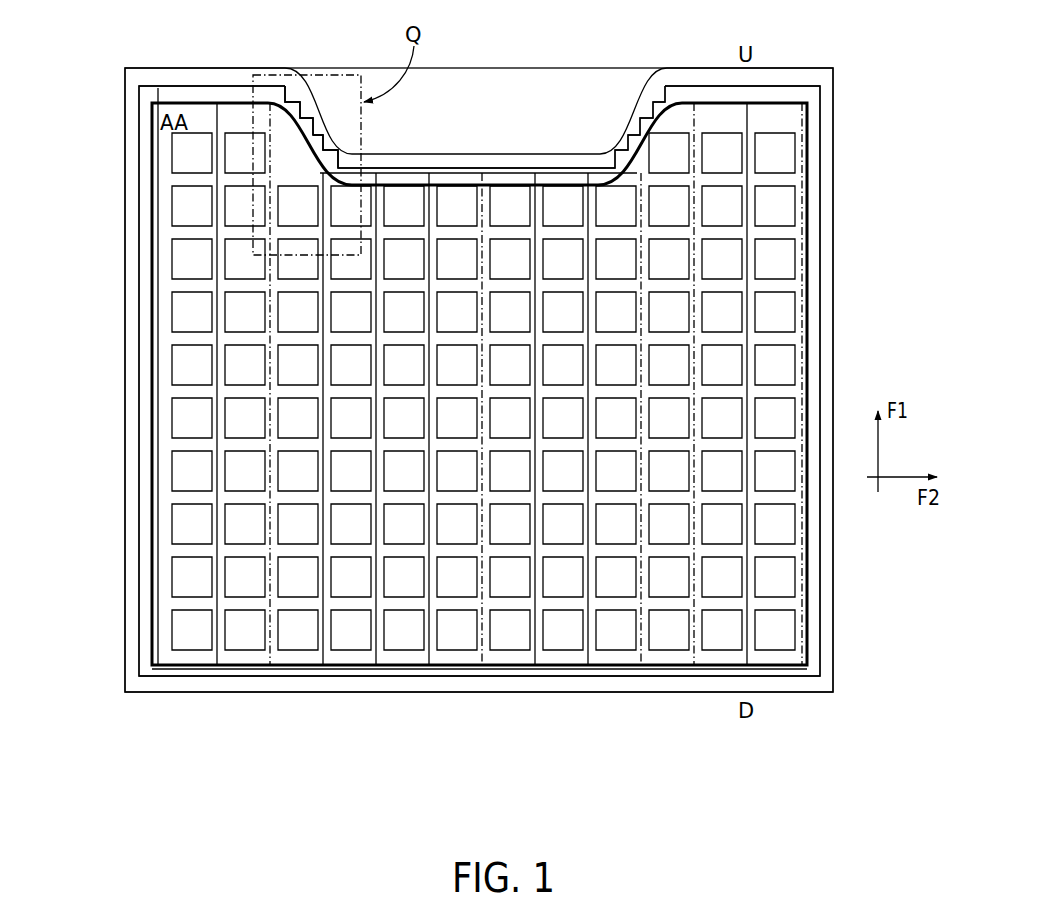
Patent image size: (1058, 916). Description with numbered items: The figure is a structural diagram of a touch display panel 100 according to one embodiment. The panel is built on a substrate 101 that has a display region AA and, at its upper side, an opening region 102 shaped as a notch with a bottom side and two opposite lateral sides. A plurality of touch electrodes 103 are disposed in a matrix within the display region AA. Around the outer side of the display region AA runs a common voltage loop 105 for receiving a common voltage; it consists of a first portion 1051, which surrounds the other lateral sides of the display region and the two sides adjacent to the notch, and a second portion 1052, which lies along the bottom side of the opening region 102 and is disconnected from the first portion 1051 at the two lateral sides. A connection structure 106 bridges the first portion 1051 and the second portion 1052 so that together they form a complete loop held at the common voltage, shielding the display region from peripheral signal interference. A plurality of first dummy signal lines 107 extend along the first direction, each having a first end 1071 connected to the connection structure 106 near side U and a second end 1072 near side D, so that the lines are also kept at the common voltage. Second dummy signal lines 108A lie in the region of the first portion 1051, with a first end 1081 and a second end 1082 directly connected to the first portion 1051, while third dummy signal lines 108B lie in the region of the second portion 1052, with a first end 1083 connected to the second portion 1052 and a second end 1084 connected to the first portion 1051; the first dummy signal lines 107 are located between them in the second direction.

The touch display panel 100 is at (182, 55).
The substrate 101 is at (123, 372).
The opening region 102 is at (476, 111).
The touch electrodes 103 is at (171, 527).
The common voltage loop 105 is at (905, 667).
The first portion 1051 is at (222, 85).
The second portion 1052 is at (541, 166).
The connection structure 106 is at (292, 97).
The first dummy signal lines 107 is at (326, 656).
The first end 1071 is at (326, 157).
The second end 1072 is at (267, 662).
The second dummy signal lines 108A is at (158, 235).
The third dummy signal lines 108B is at (539, 658).
The first end 1081 is at (156, 93).
The second end 1082 is at (156, 660).
The first end 1083 is at (487, 177).
The second end 1084 is at (485, 657).